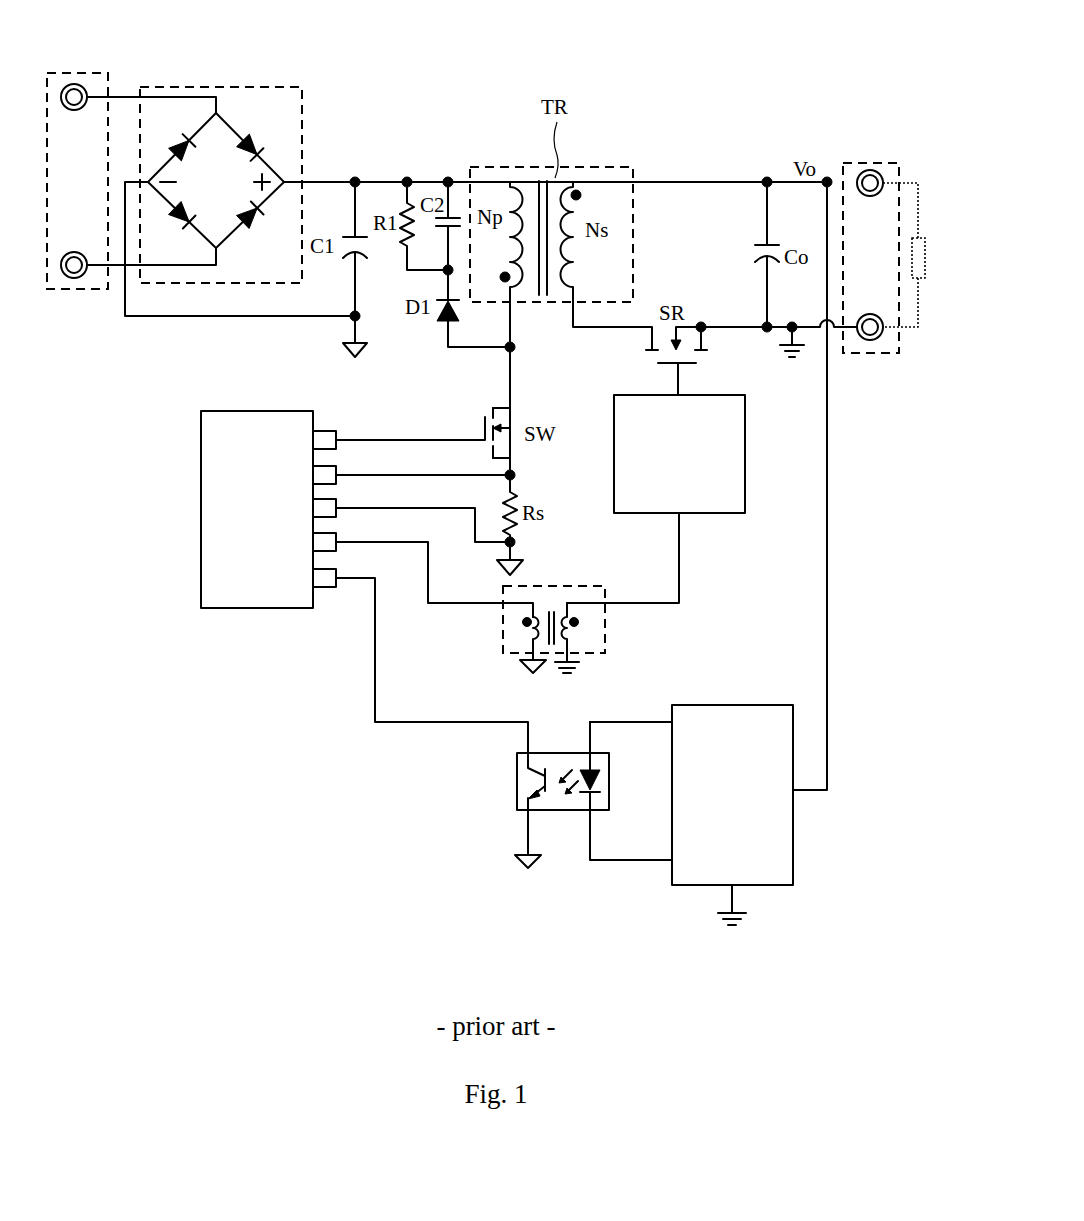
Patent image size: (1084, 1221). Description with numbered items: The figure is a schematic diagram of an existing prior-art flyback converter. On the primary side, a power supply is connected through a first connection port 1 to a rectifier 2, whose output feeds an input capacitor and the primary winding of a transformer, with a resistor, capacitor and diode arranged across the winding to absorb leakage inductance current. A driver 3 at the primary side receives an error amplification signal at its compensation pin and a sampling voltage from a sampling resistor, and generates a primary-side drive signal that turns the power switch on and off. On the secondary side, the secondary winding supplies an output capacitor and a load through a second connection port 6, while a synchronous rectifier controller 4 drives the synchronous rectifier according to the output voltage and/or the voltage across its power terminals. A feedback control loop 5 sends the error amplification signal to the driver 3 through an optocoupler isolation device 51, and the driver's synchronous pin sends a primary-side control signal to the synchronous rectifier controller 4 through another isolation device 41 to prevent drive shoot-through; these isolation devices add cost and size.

The first connection port 1 is at (52, 70).
The rectifier 2 is at (246, 104).
The driver 3 is at (222, 436).
The synchronous rectifier controller 4 is at (674, 504).
The isolation device 41 is at (590, 596).
The feedback control loop 5 is at (726, 847).
The optocoupler isolation device 51 is at (555, 762).
The second connection port 6 is at (853, 170).